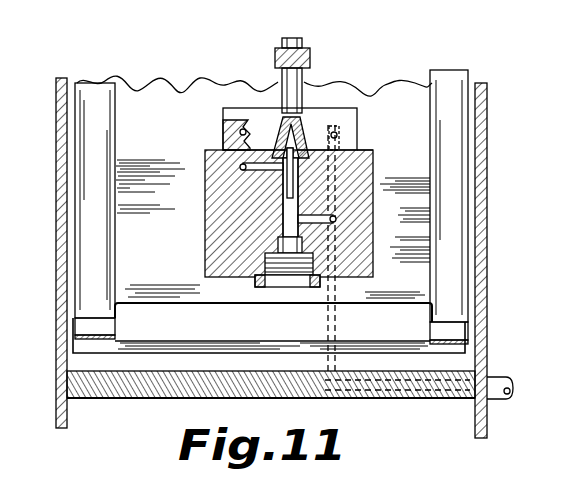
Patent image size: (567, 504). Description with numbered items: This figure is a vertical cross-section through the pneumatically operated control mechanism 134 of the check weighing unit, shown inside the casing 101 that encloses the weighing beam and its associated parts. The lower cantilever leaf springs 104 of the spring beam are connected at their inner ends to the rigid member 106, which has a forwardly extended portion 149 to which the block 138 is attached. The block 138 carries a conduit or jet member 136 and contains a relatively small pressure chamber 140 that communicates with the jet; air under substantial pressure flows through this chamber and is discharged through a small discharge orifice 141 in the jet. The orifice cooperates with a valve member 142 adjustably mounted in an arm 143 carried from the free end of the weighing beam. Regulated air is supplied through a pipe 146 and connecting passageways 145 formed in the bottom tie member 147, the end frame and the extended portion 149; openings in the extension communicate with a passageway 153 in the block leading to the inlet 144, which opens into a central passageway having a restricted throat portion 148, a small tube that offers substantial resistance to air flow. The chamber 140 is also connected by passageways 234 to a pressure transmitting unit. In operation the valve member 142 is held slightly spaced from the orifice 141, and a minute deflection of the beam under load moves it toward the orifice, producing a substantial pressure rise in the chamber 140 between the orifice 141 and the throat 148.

The casing 101 is at (56, 151).
The rigid member 106 is at (143, 80).
The pneumatically operated control mechanism 134 is at (191, 154).
The arm 143 is at (280, 47).
The valve member 142 is at (282, 77).
The discharge orifice 141 is at (296, 135).
The pressure chamber 140 is at (306, 112).
The jet member 136 is at (357, 109).
The passageway 153 is at (340, 131).
The extended portion 149 is at (360, 150).
The restricted throat portion 148 is at (300, 166).
The passageways 234 is at (255, 168).
The block 138 is at (205, 243).
The inlet 144 is at (336, 222).
The lower cantilever leaf springs 104 is at (98, 336).
The connecting passageways 145 is at (327, 322).
The bottom tie member 147 is at (100, 398).
The pipe 146 is at (497, 400).